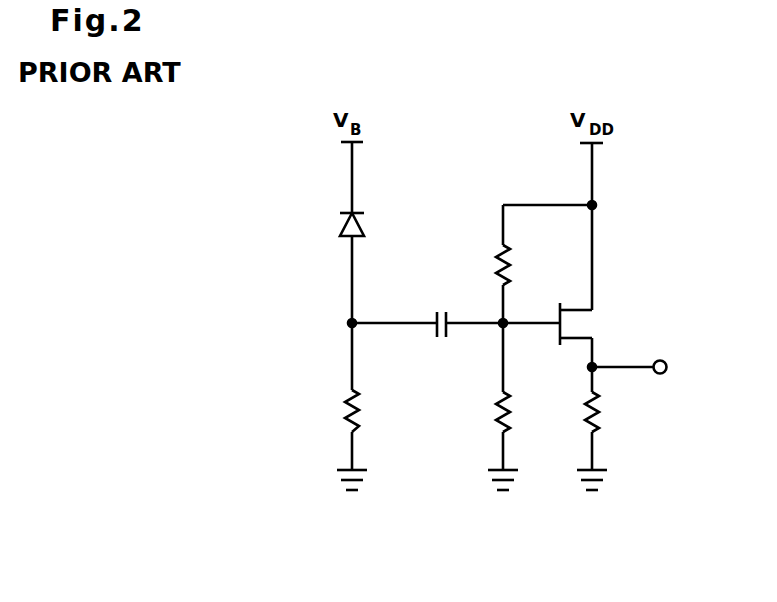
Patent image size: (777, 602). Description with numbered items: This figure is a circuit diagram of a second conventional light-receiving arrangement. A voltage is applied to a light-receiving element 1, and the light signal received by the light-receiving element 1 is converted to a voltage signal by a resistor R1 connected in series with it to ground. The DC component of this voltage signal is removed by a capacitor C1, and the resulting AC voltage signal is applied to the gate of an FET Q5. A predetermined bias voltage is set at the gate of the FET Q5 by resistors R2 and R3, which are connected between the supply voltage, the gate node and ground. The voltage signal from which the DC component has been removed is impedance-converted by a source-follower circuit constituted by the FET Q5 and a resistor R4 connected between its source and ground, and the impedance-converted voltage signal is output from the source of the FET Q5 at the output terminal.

The light-receiving element 1 is at (340, 225).
The resistor R1 is at (329, 411).
The resistor R2 is at (518, 267).
The resistor R3 is at (518, 412).
The resistor R4 is at (607, 412).
The capacitor C1 is at (442, 344).
The FET Q5 is at (595, 324).